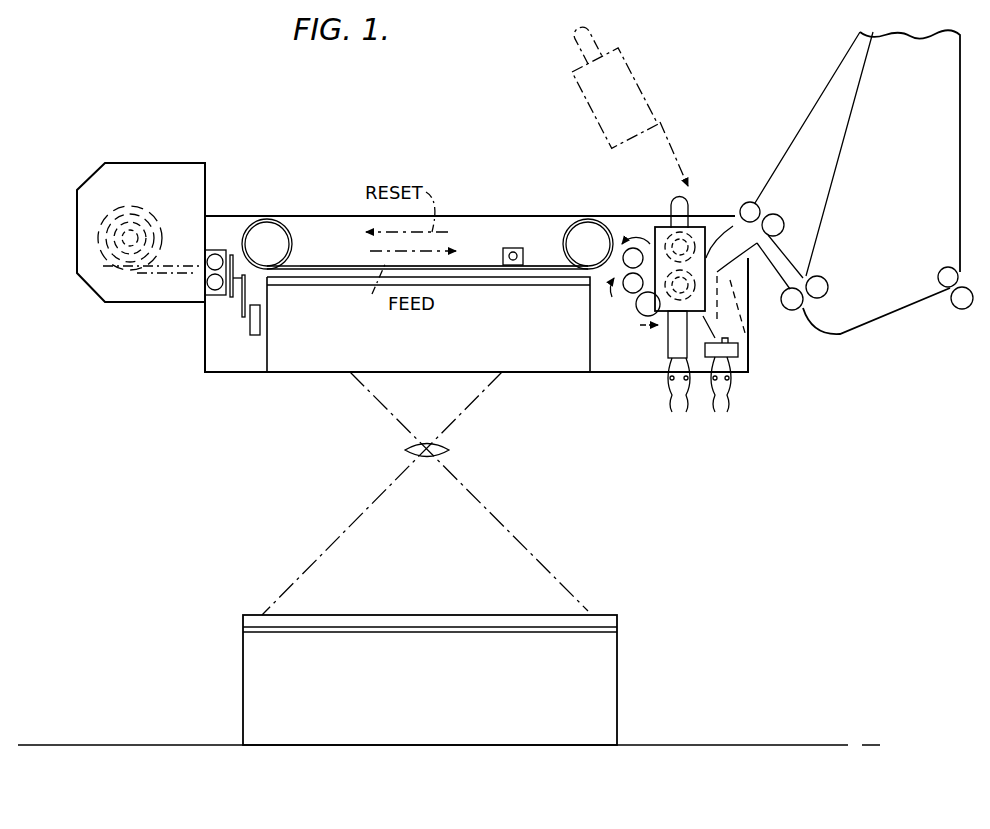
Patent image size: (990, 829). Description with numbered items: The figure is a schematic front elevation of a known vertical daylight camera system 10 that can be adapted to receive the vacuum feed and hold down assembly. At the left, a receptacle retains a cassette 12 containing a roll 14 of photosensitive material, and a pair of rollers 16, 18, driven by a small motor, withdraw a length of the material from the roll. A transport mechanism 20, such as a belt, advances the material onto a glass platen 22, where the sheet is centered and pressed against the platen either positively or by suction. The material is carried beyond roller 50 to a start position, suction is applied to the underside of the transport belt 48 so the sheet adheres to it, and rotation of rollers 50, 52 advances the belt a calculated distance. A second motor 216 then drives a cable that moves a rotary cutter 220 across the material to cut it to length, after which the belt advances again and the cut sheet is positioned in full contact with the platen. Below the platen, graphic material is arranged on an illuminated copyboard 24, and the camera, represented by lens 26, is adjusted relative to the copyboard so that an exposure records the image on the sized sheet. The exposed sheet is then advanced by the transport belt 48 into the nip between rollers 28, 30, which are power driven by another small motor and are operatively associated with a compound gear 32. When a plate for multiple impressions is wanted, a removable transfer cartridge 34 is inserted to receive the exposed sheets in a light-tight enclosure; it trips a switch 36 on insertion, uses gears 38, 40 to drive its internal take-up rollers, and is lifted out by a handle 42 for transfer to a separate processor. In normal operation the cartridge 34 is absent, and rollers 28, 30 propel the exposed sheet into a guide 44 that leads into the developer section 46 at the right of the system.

The camera system 10 is at (198, 382).
The cassette 12 is at (157, 163).
The roll 14 is at (120, 262).
The roller 16 is at (216, 258).
The roller 18 is at (210, 283).
The transport mechanism 20 is at (323, 276).
The glass platen 22 is at (477, 282).
The illuminated copyboard 24 is at (437, 615).
The lens 26 is at (437, 450).
The roller 28 is at (632, 247).
The roller 30 is at (624, 290).
The compound gear 32 is at (638, 316).
The removable transfer cartridge 34 is at (593, 113).
The switch 36 is at (740, 350).
The gear 38 is at (748, 334).
The gear 40 is at (789, 293).
The handle 42 is at (672, 200).
The guide 44 is at (740, 216).
The developer section 46 is at (831, 341).
The transport belt 48 is at (553, 270).
The roller 50 is at (268, 228).
The roller 52 is at (590, 230).
The second motor 216 is at (262, 322).
The rotary cutter 220 is at (233, 296).